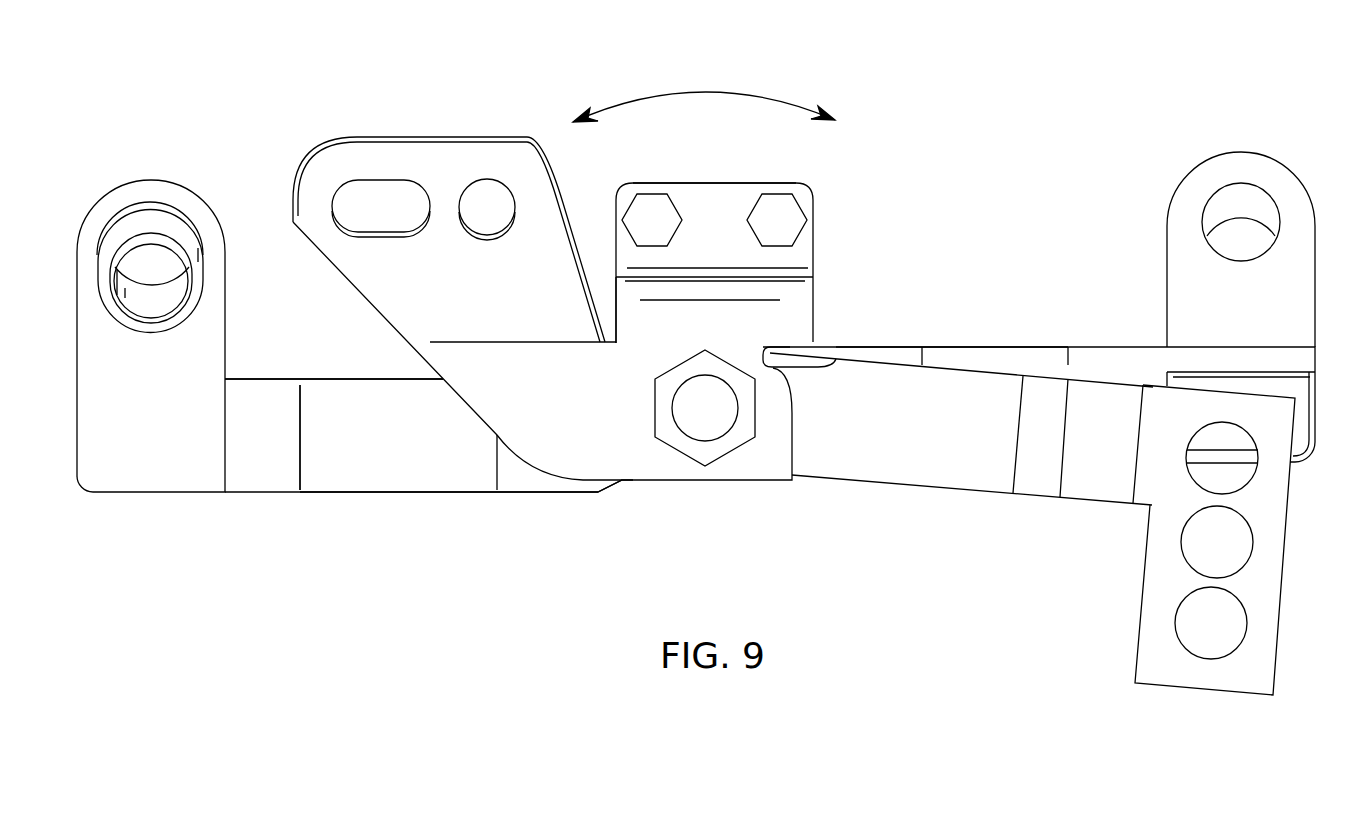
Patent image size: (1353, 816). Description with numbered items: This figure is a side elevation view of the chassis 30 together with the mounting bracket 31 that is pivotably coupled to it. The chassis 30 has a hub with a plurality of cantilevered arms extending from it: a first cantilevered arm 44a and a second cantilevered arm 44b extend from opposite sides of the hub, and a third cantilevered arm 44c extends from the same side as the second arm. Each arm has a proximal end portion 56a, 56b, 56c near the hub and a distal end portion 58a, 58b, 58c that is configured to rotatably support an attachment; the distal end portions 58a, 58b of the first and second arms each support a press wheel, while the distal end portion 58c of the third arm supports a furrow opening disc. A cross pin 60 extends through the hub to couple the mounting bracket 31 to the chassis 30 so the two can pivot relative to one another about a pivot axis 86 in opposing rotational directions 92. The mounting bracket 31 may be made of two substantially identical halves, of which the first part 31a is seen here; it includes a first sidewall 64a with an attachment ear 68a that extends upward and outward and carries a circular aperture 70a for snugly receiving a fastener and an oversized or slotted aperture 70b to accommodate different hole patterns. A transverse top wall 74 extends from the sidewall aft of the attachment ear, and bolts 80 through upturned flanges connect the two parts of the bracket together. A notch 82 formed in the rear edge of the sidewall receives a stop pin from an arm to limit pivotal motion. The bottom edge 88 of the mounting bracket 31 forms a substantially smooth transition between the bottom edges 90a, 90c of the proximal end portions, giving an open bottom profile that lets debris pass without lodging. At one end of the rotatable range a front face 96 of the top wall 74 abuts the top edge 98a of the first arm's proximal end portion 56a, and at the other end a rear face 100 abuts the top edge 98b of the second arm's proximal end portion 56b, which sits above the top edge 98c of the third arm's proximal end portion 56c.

The chassis 30 is at (1115, 348).
The mounting bracket 31 is at (803, 190).
The first part 31a is at (717, 192).
The first cantilevered arm 44a is at (328, 473).
The second cantilevered arm 44b is at (1022, 352).
The third cantilevered arm 44c is at (990, 462).
The proximal end portion 56a is at (428, 473).
The proximal end portion 56b is at (910, 350).
The proximal end portion 56c is at (912, 462).
The distal end portion 58a is at (175, 196).
The distal end portion 58b is at (1299, 178).
The distal end portion 58c is at (1287, 547).
The cross pin 60 is at (713, 428).
The first sidewall 64a is at (625, 463).
The attachment ear 68a is at (440, 152).
The aperture 70a is at (497, 182).
The aperture 70b is at (382, 180).
The top wall 74 is at (793, 275).
The bolt 80 is at (657, 203).
The notch 82 is at (832, 364).
The pivot axis 86 is at (705, 408).
The bottom edge 88 is at (762, 480).
The bottom edge 90a is at (547, 490).
The bottom edge 90c is at (847, 478).
The opposing rotational directions 92 is at (705, 92).
The front face 96 is at (615, 288).
The top edge 98a is at (368, 378).
The top edge 98b is at (868, 349).
The top edge 98c is at (972, 370).
The rear face 100 is at (813, 290).